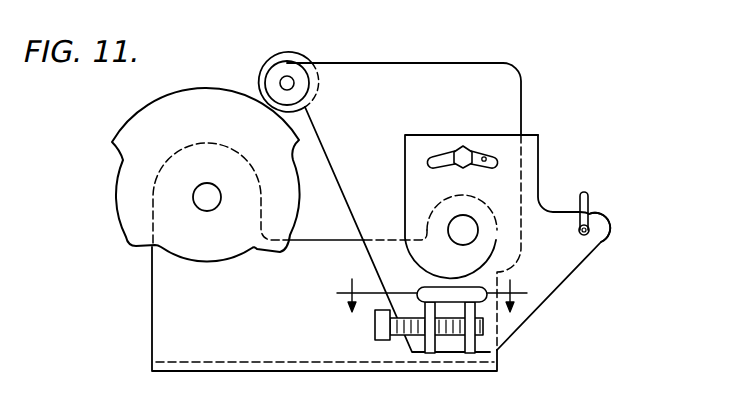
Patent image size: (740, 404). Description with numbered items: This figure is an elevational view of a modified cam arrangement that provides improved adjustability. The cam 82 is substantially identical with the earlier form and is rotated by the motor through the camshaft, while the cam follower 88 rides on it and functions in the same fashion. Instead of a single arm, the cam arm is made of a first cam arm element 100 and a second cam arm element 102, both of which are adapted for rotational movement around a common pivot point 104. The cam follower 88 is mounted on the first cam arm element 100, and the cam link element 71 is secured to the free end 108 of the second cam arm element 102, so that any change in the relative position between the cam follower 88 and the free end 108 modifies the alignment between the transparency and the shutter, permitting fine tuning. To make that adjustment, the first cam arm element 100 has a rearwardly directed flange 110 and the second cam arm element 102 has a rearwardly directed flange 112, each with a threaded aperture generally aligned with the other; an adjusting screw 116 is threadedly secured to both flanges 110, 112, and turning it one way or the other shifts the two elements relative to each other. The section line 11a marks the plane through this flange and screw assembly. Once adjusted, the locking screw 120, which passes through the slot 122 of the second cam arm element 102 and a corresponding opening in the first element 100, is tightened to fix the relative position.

The cam link element 71 is at (591, 203).
The cam 82 is at (117, 195).
The cam follower 88 is at (264, 62).
The first cam arm element 100 is at (460, 63).
The second cam arm element 102 is at (573, 277).
The pivot point 104 is at (452, 224).
The free end of second cam arm element 108 is at (602, 243).
The rearwardly directed flange 110 is at (432, 355).
The rearwardly directed flange 112 is at (472, 355).
The adjusting screw 116 is at (374, 332).
The locking screw 120 is at (463, 146).
The slot 122 is at (488, 157).
The section line 11a- 11a is at (431, 291).